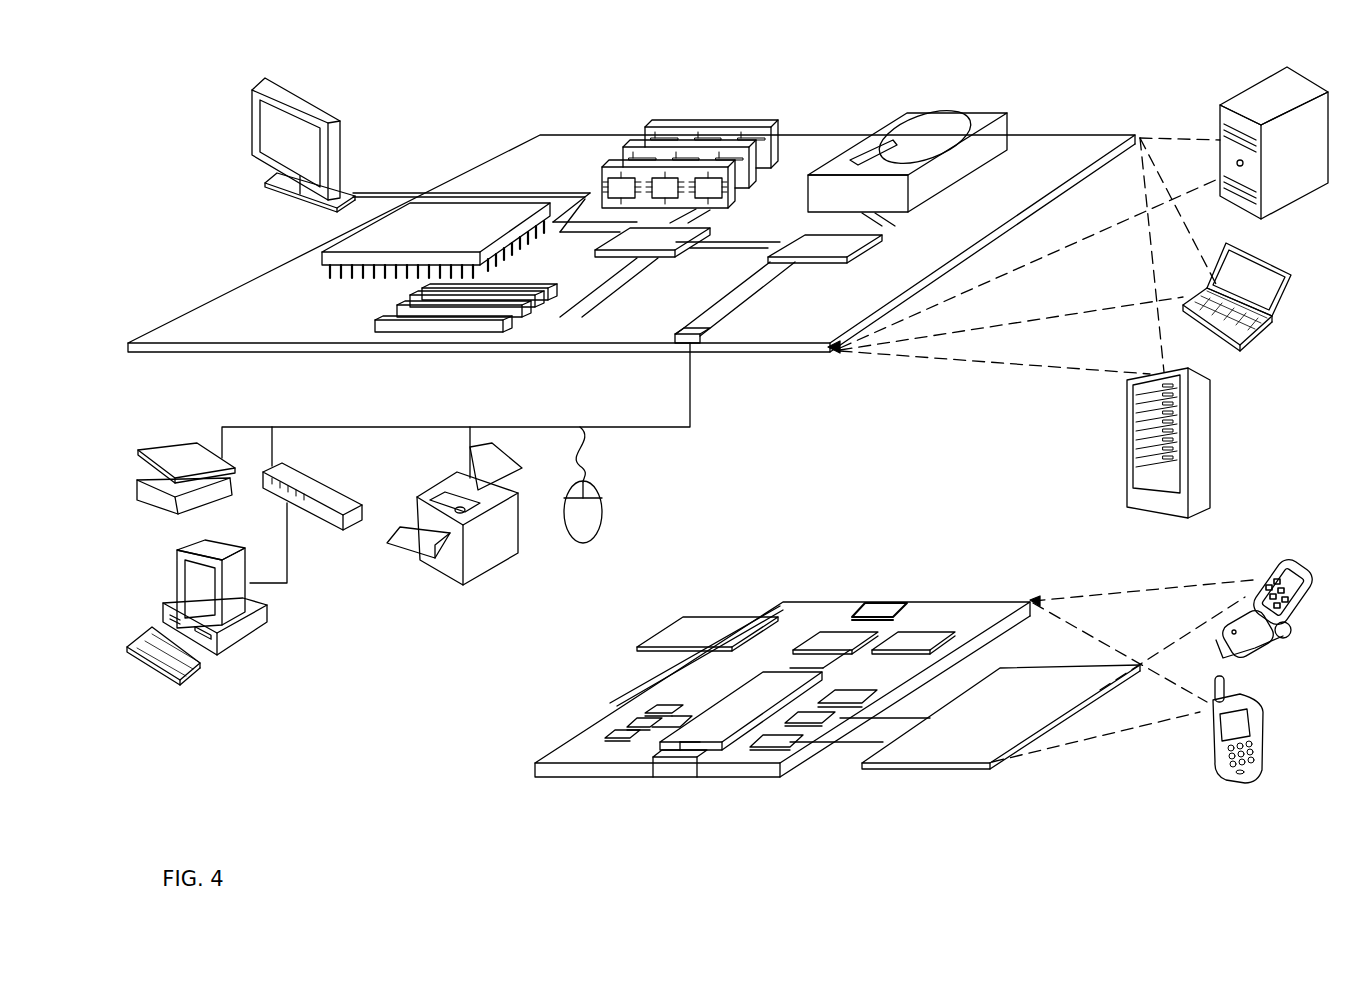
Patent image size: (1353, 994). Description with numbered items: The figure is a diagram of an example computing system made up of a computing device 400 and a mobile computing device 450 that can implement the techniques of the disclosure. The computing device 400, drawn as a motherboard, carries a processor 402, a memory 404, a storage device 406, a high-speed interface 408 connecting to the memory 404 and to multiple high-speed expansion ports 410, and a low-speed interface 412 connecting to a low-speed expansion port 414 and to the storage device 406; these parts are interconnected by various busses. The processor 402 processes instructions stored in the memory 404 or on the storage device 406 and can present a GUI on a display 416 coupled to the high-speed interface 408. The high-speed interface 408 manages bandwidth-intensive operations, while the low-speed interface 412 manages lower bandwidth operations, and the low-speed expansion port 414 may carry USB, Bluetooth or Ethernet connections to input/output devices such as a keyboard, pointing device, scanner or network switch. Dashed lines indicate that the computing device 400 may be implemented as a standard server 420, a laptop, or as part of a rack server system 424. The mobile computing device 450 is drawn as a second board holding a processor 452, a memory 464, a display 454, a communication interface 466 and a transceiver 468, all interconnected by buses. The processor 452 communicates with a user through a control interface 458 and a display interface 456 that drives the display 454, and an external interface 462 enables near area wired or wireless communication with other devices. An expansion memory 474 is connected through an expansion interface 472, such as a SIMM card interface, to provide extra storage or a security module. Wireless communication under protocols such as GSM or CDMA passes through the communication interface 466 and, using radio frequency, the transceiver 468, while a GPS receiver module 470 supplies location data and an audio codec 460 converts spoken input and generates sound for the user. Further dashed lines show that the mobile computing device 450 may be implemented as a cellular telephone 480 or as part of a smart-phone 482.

The computing device 400 is at (452, 103).
The processor 402 is at (324, 255).
The memory 404 is at (654, 132).
The storage device 406 is at (893, 118).
The high-speed interface 408 is at (632, 243).
The high-speed expansion ports 410 is at (388, 317).
The low-speed interface 412 is at (805, 243).
The low-speed expansion port 414 is at (700, 343).
The display 416 is at (258, 90).
The standard server 420 is at (1220, 118).
The rack server system 424 is at (1126, 468).
The mobile computing device 450 is at (512, 776).
The processor 452 is at (714, 736).
The display 454 is at (953, 750).
The display interface 456 is at (783, 741).
The control interface 458 is at (815, 717).
The audio codec 460 is at (843, 697).
The external interface 462 is at (678, 770).
The memory 464 is at (632, 724).
The communication interface 466 is at (833, 640).
The transceiver 468 is at (913, 640).
The GPS receiver module 470 is at (888, 607).
The expansion interface 472 is at (763, 612).
The expansion memory 474 is at (690, 618).
The cellular telephone 480 is at (1266, 578).
The smart-phone 482 is at (1212, 733).